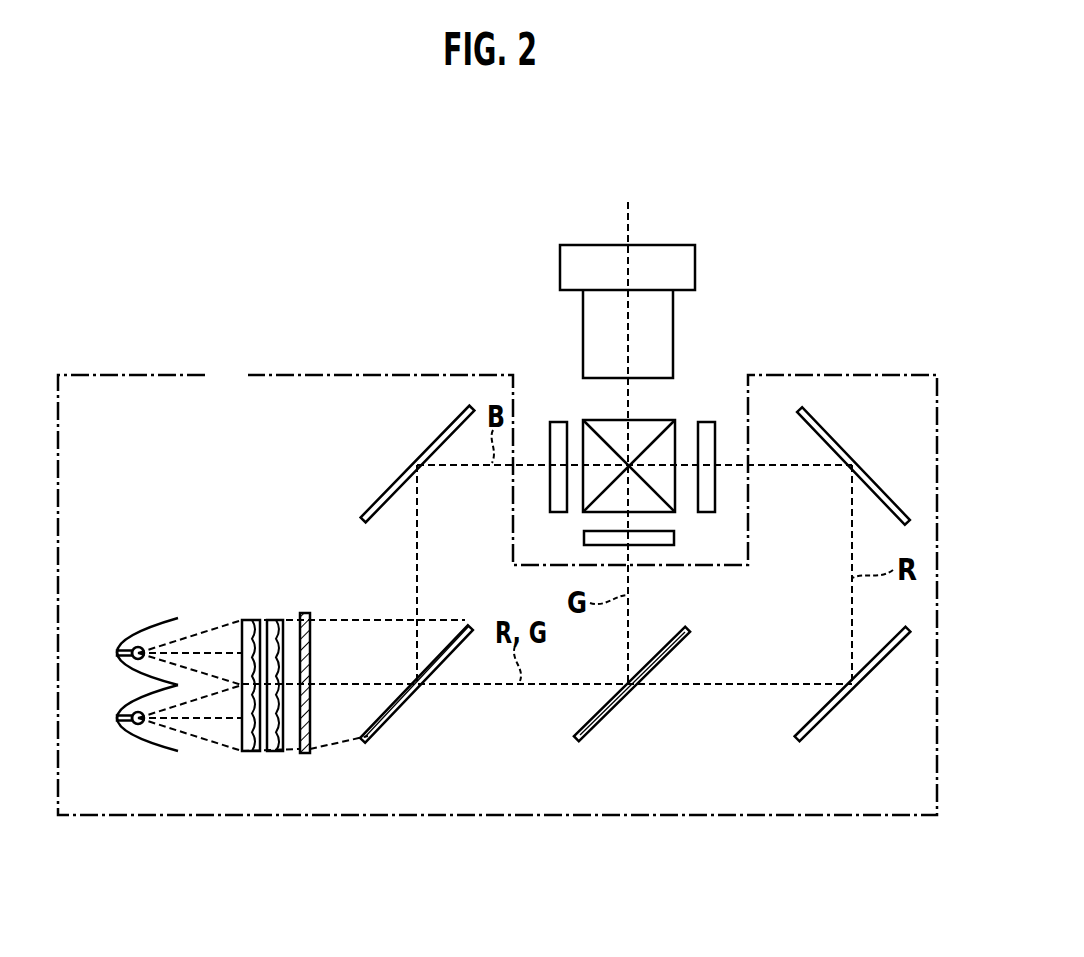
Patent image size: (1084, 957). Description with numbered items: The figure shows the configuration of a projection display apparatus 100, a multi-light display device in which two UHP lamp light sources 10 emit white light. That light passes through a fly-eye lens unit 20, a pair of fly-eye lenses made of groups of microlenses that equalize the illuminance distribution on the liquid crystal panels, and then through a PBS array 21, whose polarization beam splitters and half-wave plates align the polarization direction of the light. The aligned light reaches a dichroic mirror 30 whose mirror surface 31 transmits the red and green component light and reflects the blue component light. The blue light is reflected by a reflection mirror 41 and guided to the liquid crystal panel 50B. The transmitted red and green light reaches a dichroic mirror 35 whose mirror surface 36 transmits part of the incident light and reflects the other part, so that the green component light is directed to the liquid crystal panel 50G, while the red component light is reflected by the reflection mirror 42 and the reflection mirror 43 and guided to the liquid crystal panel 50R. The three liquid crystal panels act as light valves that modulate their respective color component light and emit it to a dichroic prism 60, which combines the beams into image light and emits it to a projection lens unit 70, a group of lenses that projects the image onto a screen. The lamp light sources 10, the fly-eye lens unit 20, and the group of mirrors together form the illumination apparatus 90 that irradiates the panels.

The lamp light sources 10 is at (110, 615).
The fly-eye lens unit 20 is at (285, 759).
The PBS array 21 is at (305, 753).
The dichroic mirror 30 is at (393, 710).
The mirror surface 31 is at (443, 642).
The dichroic mirror 35 is at (605, 713).
The mirror surface 36 is at (657, 638).
The reflection mirror 41 is at (440, 437).
The reflection mirror 42 is at (830, 713).
The reflection mirror 43 is at (890, 500).
The liquid crystal panel 50B is at (558, 422).
The liquid crystal panel 50G is at (674, 538).
The liquid crystal panel 50R is at (707, 422).
The dichroic prism 60 is at (643, 420).
The projection lens unit 70 is at (665, 315).
The illumination apparatus 90 is at (497, 585).
The projection display apparatus 100 is at (792, 193).